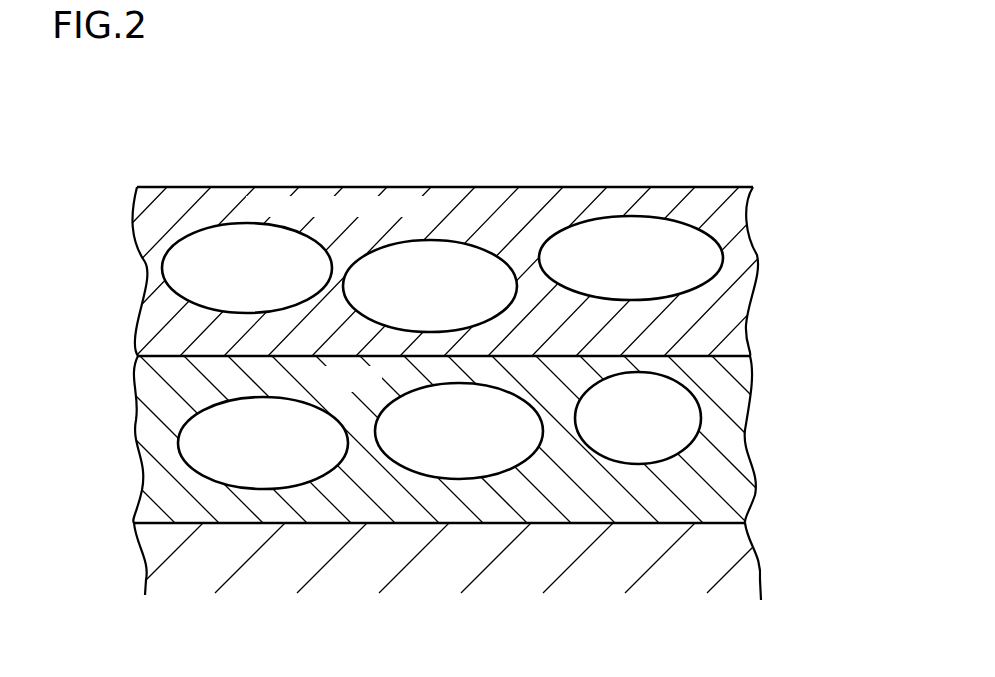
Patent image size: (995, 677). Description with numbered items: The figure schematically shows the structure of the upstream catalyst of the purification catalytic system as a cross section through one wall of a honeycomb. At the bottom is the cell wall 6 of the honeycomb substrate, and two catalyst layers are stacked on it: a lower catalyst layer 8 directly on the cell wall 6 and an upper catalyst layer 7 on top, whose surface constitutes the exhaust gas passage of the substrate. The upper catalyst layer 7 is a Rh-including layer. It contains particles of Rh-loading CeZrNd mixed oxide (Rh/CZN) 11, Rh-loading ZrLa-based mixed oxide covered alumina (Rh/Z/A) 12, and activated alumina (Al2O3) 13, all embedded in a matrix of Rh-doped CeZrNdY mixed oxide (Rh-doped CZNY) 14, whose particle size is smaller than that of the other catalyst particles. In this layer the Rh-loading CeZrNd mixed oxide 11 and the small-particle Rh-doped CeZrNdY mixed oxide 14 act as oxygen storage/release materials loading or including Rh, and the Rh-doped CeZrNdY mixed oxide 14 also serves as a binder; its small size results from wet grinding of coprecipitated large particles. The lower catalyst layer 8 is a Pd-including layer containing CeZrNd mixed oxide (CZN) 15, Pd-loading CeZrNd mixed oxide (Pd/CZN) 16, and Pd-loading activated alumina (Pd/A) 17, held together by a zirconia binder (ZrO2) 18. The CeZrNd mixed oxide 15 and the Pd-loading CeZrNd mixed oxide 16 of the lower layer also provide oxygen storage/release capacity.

The cell wall 6 is at (693, 523).
The upper catalyst layer 7 is at (682, 187).
The lower catalyst layer 8 is at (707, 356).
The Rh-loading CeZrNd mixed oxide 11 is at (222, 223).
The Rh-loading ZrLa-based mixed oxide covered alumina 12 is at (433, 240).
The activated alumina 13 is at (613, 217).
The Rh-doped CeZrNdY mixed oxide 14 is at (540, 202).
The CeZrNd mixed oxide 15 is at (647, 465).
The Pd-loading CeZrNd mixed oxide 16 is at (260, 490).
The Pd-loading activated alumina 17 is at (447, 479).
The zirconia binder 18 is at (363, 500).